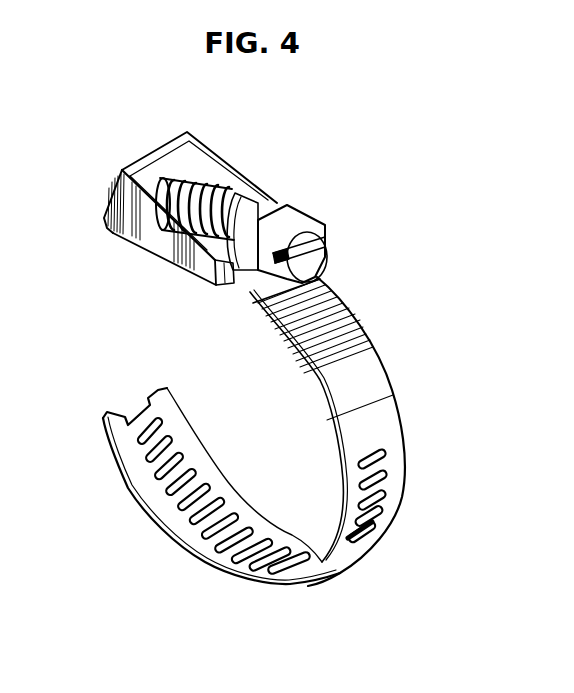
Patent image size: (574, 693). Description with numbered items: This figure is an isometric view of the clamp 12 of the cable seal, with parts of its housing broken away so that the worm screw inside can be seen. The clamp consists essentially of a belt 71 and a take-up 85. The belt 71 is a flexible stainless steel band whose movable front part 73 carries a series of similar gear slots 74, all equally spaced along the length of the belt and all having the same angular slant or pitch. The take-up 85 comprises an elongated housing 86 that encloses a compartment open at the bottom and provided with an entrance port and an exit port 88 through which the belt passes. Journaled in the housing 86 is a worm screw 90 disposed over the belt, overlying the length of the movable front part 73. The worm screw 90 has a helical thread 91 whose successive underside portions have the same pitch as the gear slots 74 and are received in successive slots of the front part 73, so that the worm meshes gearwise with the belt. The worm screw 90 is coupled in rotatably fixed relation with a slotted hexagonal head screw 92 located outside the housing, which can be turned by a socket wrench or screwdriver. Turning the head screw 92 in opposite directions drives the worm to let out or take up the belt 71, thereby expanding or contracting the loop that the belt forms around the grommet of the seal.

The clamp 12 is at (397, 288).
The belt 71 is at (362, 357).
The front part of the belt 73 is at (228, 273).
The gear slots 74 is at (172, 440).
The take-up 85 is at (291, 176).
The housing 86 is at (162, 243).
The exit port 88 is at (232, 283).
The worm screw 90 is at (133, 222).
The helical thread 91 is at (176, 172).
The slotted hexagonal head screw 92 is at (287, 205).